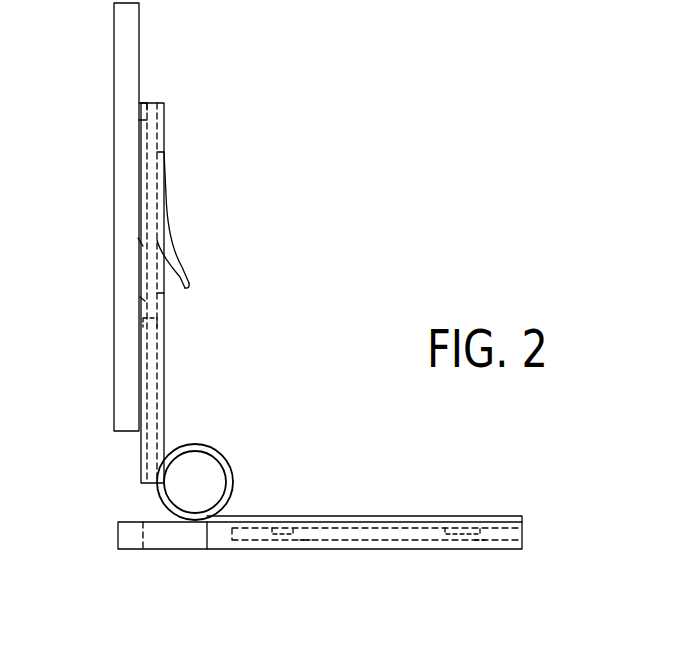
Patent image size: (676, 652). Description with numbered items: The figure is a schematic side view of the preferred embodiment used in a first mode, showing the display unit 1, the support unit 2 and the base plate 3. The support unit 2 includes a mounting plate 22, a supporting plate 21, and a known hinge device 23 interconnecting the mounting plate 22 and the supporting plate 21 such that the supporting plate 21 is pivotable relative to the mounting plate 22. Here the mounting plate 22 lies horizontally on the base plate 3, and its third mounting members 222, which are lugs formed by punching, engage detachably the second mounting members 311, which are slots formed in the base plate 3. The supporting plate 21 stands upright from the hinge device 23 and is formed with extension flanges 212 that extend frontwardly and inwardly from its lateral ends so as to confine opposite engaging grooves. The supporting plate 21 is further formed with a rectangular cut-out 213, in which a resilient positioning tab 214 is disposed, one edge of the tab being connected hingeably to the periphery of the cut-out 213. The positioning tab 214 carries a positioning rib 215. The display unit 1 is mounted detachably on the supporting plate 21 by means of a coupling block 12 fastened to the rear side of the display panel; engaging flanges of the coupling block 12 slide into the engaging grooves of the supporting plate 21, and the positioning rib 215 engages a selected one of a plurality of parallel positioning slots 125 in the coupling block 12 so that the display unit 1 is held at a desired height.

The display unit 1 is at (161, 45).
The support unit 2 is at (320, 450).
The base plate 3 is at (118, 537).
The coupling block 12 is at (140, 297).
The positioning slots 125 is at (138, 238).
The supporting plate 21 is at (166, 128).
The extension flanges 212 is at (153, 96).
The rectangular cut-out 213 is at (163, 293).
The resilient positioning tab 214 is at (190, 274).
The positioning rib 215 is at (166, 243).
The mounting plate 22 is at (518, 521).
The third mounting members 222 is at (305, 550).
The hinge device 23 is at (198, 467).
The second mounting members 311 is at (264, 528).